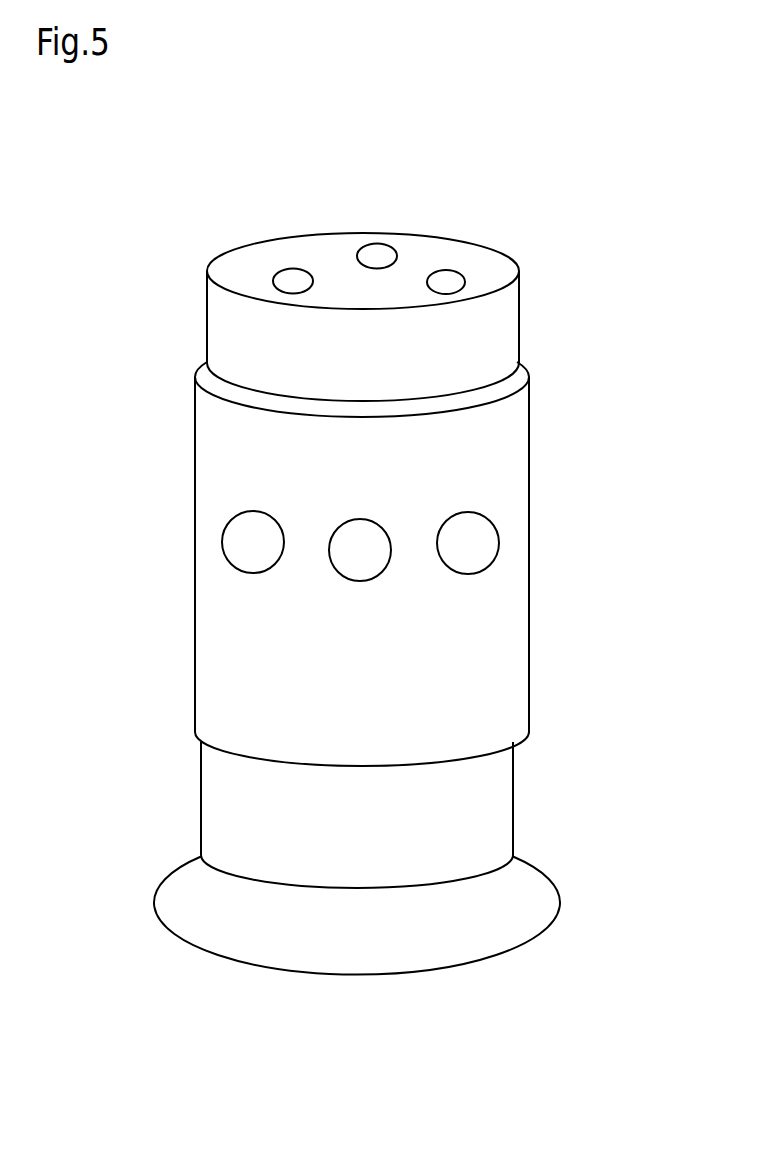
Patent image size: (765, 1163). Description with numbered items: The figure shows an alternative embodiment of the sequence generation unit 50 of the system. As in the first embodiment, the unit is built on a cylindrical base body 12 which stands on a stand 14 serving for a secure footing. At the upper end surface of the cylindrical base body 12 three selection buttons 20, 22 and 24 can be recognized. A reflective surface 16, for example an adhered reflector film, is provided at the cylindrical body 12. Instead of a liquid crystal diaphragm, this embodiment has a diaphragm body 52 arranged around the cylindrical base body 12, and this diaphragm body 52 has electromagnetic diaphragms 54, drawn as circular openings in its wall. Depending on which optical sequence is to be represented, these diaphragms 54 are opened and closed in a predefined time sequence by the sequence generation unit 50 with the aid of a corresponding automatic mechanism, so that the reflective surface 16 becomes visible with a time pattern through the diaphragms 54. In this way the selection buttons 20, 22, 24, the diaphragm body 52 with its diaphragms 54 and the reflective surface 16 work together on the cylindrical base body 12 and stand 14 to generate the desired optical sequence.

The cylindrical base body 12 is at (490, 795).
The stand 14 is at (542, 877).
The reflective surface 16 is at (510, 387).
The selection button 20 is at (297, 278).
The selection button 22 is at (378, 253).
The selection button 24 is at (445, 278).
The sequence generation unit 50 is at (580, 232).
The diaphragm body 52 is at (506, 634).
The electromagnetic diaphragms 54 is at (240, 539).